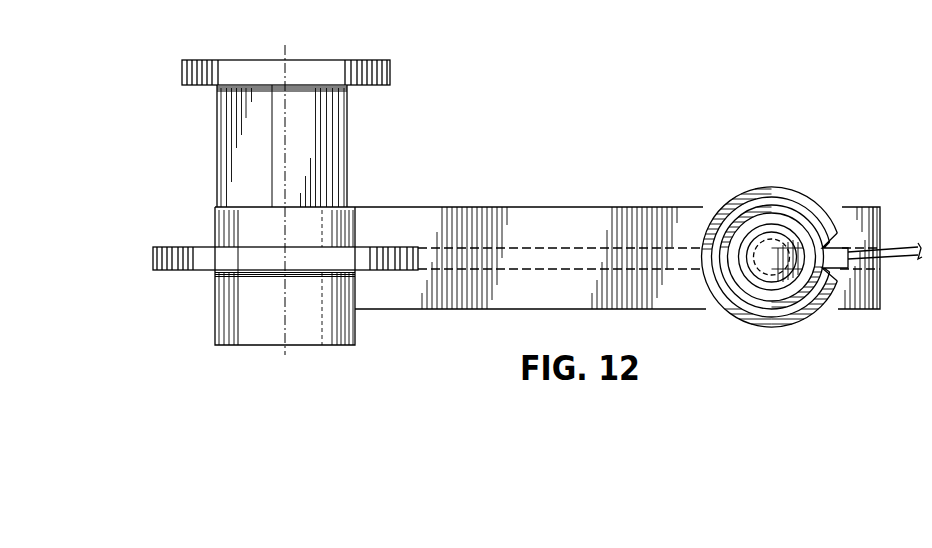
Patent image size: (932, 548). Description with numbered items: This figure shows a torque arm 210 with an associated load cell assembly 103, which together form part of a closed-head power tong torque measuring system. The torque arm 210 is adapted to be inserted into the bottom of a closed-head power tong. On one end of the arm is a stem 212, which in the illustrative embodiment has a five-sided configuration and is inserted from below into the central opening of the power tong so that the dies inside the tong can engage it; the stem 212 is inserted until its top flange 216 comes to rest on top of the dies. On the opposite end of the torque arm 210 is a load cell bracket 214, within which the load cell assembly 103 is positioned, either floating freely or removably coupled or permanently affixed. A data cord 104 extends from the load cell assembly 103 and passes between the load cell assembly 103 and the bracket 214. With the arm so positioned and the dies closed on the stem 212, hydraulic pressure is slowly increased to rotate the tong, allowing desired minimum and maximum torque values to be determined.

The load cell assembly 103 is at (762, 217).
The data cord 104 is at (893, 259).
The torque arm 210 is at (522, 215).
The stem 212 is at (222, 153).
The load cell bracket 214 is at (762, 326).
The top flange 216 is at (390, 67).